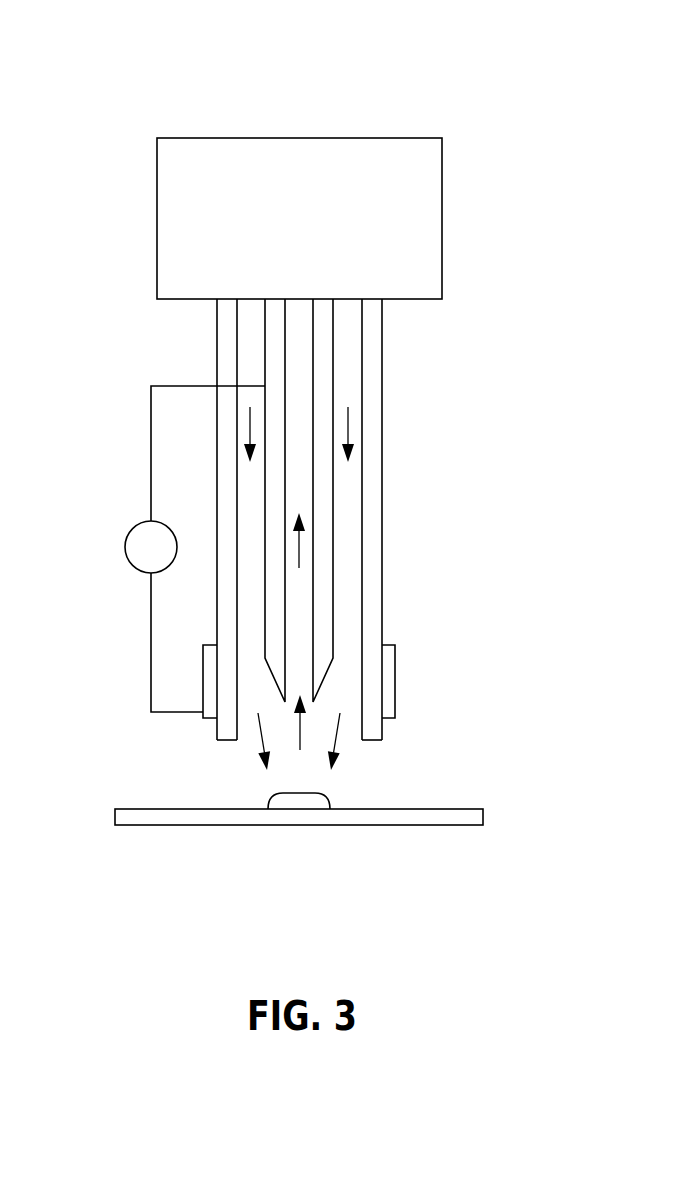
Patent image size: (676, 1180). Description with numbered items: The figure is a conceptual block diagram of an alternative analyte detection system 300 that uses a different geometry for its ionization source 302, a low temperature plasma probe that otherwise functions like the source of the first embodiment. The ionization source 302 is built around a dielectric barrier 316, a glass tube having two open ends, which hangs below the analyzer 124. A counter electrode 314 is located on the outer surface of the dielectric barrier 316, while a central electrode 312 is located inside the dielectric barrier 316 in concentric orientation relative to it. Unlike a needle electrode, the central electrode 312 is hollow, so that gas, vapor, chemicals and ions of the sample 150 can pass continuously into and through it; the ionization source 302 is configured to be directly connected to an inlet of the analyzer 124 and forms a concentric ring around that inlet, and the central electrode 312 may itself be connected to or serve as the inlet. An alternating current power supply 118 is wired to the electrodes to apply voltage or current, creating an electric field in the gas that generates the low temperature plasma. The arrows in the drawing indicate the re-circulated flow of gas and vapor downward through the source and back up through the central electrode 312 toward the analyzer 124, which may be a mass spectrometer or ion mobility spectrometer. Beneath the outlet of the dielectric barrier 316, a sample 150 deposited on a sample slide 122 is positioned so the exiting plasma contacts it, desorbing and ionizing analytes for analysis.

The analyte detection system 300 is at (114, 54).
The analyzer 124 is at (453, 207).
The ionization source 302 is at (311, 534).
The central electrode 312 is at (277, 373).
The dielectric barrier 316 is at (373, 607).
The counter electrode 314 is at (203, 683).
The alternating current power supply 118 is at (124, 548).
The sample 150 is at (340, 786).
The sample slide 122 is at (300, 825).